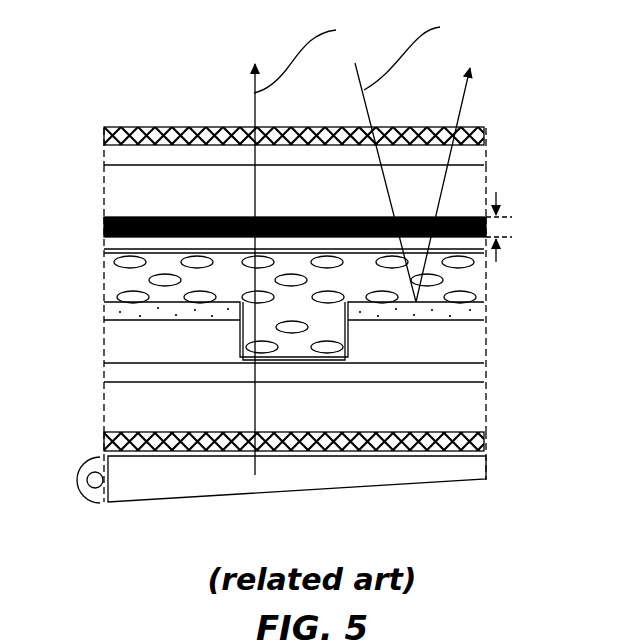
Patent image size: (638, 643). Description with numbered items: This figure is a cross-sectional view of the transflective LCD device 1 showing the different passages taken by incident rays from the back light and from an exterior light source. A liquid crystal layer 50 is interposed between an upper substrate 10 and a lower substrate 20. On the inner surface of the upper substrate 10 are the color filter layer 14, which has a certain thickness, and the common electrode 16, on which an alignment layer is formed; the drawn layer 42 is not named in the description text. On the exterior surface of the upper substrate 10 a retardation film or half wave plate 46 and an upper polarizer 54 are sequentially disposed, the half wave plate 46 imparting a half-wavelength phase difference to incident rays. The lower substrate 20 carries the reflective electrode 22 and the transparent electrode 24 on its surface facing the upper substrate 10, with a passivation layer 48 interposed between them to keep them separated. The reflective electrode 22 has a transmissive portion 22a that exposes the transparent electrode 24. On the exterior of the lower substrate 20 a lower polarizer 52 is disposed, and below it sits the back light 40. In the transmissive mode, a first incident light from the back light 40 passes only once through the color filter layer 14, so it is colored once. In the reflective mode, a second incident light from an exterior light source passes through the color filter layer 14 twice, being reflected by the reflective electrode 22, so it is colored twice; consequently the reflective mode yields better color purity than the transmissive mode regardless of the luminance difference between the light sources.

The transflective LCD device 1 is at (520, 170).
The upper substrate 10 is at (115, 198).
The color filter layer 14 is at (104, 237).
The common electrode 16 is at (108, 251).
The common electrode 42 is at (113, 246).
The half wave plate 46 is at (112, 157).
The passivation layer 48 is at (117, 345).
The liquid crystal layer 50 is at (475, 272).
The lower substrate 20 is at (115, 412).
The reflective electrode 22 is at (480, 315).
The transmissive portion 22a is at (247, 318).
The transparent electrode 24 is at (118, 372).
The lower polarizer 52 is at (485, 443).
The upper polarizer 54 is at (483, 133).
The back light 40 is at (475, 465).